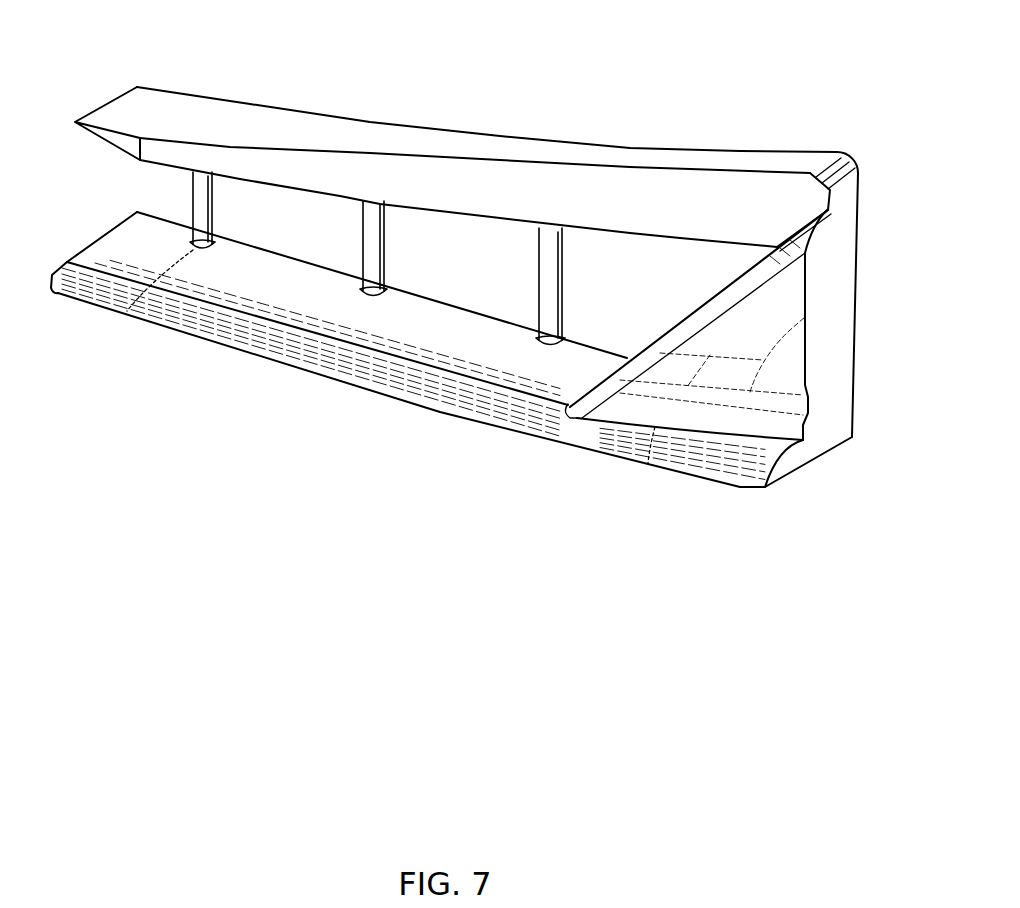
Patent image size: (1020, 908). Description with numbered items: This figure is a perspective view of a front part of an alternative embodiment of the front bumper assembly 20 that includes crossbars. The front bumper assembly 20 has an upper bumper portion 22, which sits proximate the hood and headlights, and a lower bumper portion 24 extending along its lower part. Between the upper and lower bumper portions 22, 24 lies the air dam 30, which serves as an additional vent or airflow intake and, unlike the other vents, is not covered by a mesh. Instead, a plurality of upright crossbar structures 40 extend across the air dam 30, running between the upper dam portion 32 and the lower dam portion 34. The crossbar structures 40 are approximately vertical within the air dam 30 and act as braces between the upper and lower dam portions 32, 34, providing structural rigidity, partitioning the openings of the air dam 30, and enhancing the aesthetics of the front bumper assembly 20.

The front bumper assembly 20 is at (232, 143).
The upper bumper portion 22 is at (500, 135).
The lower bumper portion 24 is at (530, 436).
The air dam 30 is at (753, 163).
The upper dam portion 32 is at (663, 235).
The lower dam portion 34 is at (402, 320).
The crossbar structures 40 is at (214, 200).